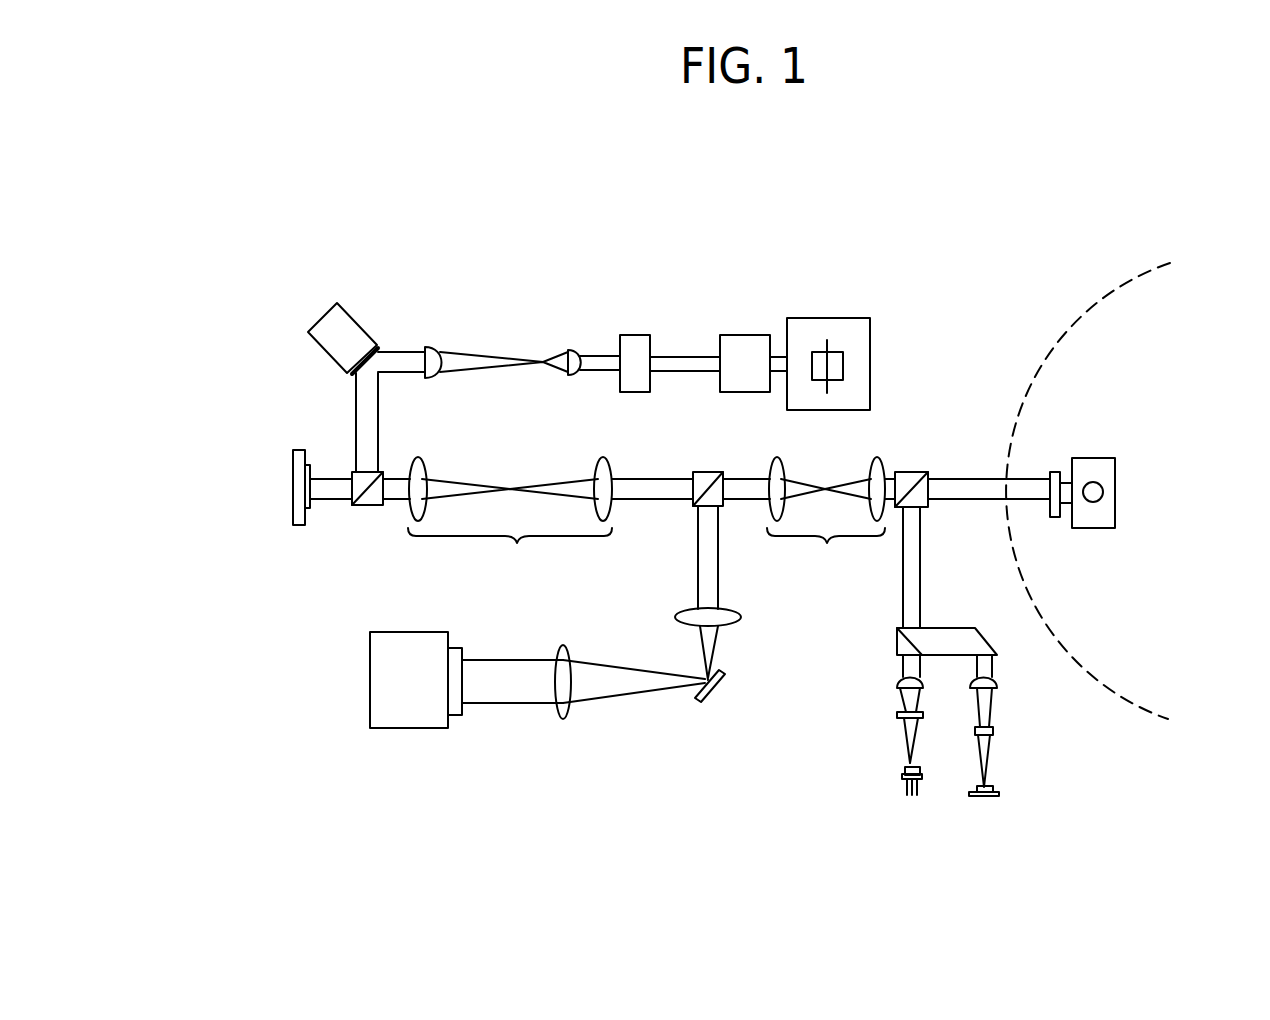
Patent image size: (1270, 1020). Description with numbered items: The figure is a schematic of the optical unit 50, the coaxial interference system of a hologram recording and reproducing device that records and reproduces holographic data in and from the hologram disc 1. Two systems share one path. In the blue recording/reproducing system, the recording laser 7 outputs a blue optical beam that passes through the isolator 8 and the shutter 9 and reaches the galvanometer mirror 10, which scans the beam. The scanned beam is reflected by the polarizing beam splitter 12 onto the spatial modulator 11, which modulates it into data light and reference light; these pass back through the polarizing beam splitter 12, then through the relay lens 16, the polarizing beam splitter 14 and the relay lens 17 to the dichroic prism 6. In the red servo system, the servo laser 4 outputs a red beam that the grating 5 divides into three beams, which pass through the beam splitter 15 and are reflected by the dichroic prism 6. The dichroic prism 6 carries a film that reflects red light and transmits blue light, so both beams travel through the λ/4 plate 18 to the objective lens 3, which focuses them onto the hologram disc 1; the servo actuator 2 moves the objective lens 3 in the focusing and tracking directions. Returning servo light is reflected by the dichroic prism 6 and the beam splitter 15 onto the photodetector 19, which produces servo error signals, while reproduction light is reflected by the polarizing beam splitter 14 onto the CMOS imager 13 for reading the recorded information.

The optical unit 50 is at (457, 150).
The hologram disc 1 is at (1160, 272).
The servo actuator 2 is at (1093, 520).
The objective lens 3 is at (1093, 482).
The λ/4 plate 18 is at (1058, 470).
The dichroic prism 6 is at (920, 471).
The recording laser 7 is at (800, 318).
The isolator 8 is at (740, 335).
The shutter 9 is at (632, 335).
The galvanometer mirror 10 is at (353, 312).
The spatial modulator 11 is at (292, 468).
The polarizing beam splitter 12 is at (365, 507).
The CMOS imager 13 is at (403, 728).
The polarizing beam splitter 14 is at (718, 471).
The beam splitter 15 is at (992, 643).
The relay lens 16 is at (510, 518).
The relay lens 17 is at (826, 518).
The grating 5 is at (898, 719).
The servo laser 4 is at (922, 772).
The photodetector 19 is at (999, 793).